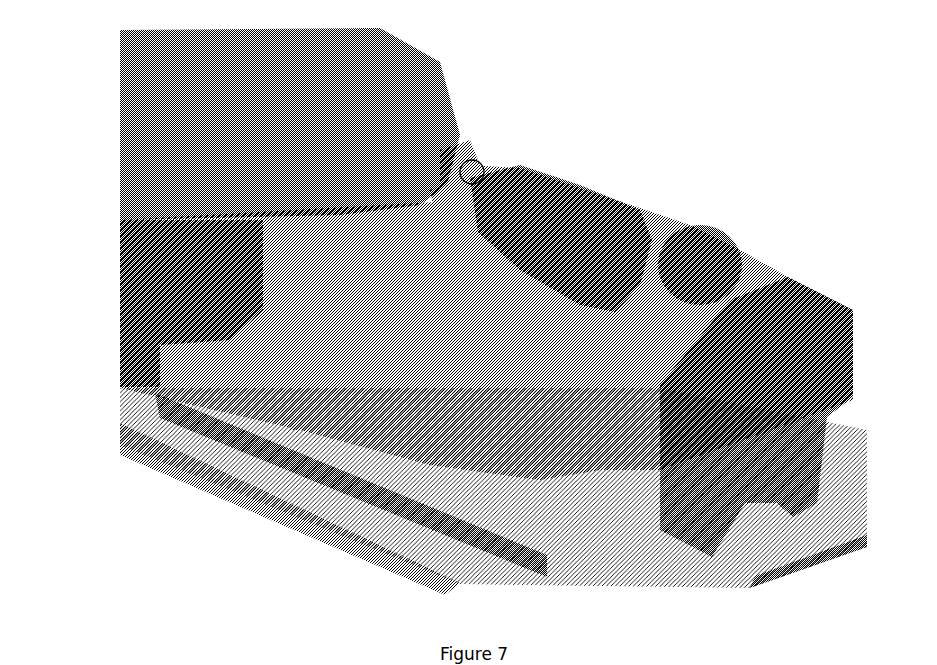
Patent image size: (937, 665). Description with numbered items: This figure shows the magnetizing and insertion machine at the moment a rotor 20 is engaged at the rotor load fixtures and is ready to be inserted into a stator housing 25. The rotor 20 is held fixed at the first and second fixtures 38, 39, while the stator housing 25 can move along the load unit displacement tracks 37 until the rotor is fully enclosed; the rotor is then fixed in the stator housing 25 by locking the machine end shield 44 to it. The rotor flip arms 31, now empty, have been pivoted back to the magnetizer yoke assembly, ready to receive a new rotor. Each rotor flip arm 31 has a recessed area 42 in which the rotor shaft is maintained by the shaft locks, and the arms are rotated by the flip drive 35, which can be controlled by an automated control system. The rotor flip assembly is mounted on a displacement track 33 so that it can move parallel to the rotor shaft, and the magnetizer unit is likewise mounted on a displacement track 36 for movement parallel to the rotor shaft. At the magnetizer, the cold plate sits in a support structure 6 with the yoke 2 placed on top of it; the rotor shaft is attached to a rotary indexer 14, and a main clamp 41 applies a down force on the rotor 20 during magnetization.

The yoke 2 is at (395, 385).
The support structure 6 is at (310, 418).
The rotary indexer 14 is at (133, 293).
The rotor 20 is at (573, 195).
The stator housing 25 is at (410, 42).
The rotor flip arm 31 is at (520, 365).
The displacement track 33 is at (603, 440).
The flip drive 35 is at (860, 327).
The displacement track 36 is at (143, 443).
The load unit displacement tracks 37 is at (490, 178).
The first fixture 38 is at (447, 122).
The second fixture 39 is at (737, 290).
The main clamp 41 is at (330, 345).
The recessed area 42 is at (445, 335).
The machine end shield 44 is at (727, 233).